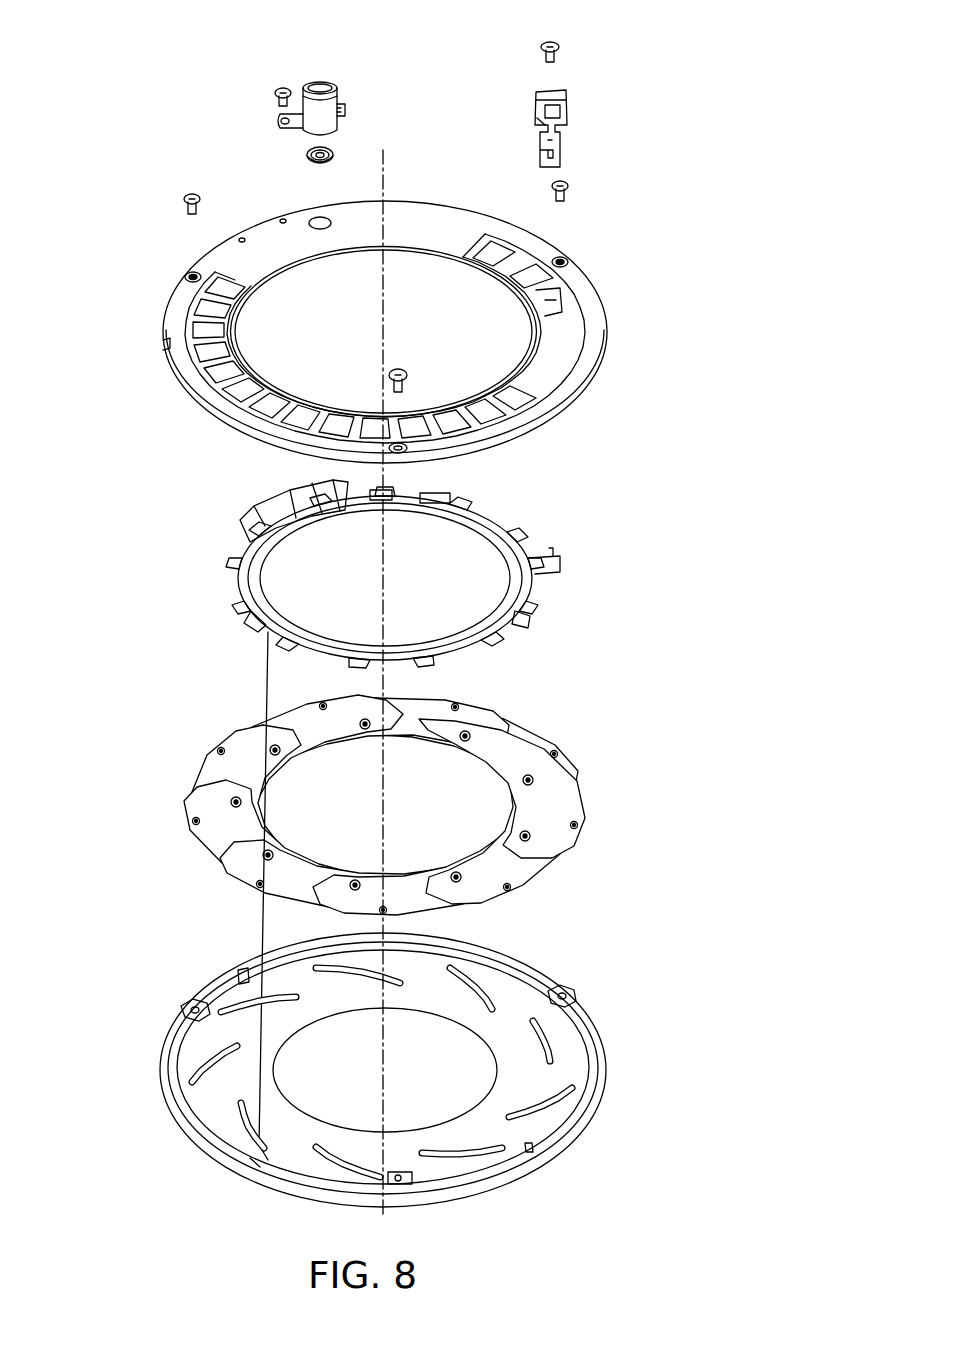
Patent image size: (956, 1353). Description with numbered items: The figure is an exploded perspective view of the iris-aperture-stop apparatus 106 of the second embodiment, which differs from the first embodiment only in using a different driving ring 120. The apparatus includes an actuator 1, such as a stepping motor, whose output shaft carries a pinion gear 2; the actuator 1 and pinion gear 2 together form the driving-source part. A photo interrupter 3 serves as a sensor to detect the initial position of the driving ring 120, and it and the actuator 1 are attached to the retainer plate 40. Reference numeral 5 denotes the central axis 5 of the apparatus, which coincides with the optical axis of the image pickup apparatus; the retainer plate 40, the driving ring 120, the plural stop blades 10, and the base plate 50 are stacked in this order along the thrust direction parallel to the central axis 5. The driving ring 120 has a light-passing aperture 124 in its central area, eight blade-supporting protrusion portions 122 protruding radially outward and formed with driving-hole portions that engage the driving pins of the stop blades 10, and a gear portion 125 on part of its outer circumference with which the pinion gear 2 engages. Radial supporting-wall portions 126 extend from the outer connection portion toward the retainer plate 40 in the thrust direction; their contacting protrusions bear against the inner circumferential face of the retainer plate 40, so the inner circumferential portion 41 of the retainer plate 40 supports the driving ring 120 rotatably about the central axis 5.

The iris-aperture-stop apparatus 106 is at (143, 228).
The actuator 1 is at (320, 82).
The pinion gear 2 is at (333, 150).
The photo interrupter 3 is at (568, 149).
The central axis 5 is at (383, 183).
The retainer plate 40 is at (177, 357).
The inner circumferential portion 41 is at (423, 245).
The driving ring 120 is at (237, 609).
The blade-supporting protrusion portion 122 is at (257, 627).
The light-passing aperture 124 is at (460, 557).
The gear portion 125 is at (250, 508).
The radial supporting-wall portion 126 is at (525, 620).
The stop blade 10 is at (220, 843).
The base plate 50 is at (217, 1107).